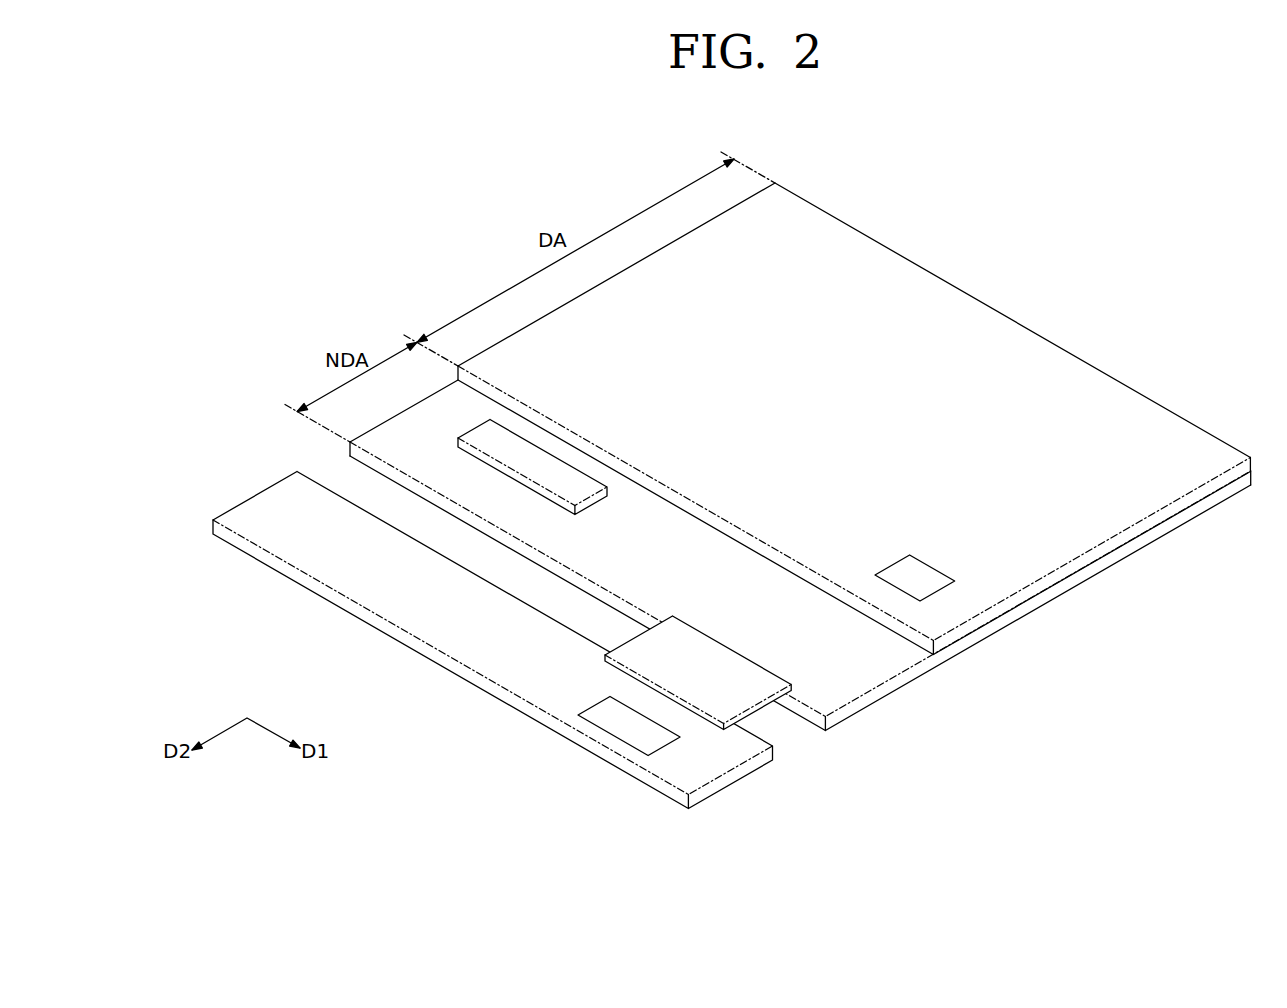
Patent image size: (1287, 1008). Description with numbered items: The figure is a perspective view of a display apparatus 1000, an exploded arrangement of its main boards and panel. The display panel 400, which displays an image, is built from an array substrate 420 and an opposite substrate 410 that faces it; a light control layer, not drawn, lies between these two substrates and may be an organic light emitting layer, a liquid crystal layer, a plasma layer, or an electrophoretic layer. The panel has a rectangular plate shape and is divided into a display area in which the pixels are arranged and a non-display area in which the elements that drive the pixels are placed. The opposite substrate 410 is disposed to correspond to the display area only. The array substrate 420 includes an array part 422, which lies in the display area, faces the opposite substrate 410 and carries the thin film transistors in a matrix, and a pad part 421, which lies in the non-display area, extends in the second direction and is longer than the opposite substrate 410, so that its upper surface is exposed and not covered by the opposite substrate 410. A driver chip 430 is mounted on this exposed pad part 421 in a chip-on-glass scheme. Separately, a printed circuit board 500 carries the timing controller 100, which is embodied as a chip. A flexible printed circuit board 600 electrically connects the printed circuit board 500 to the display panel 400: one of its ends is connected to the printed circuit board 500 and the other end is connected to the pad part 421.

The display apparatus 1000 is at (732, 492).
The display panel 400 is at (800, 469).
The opposite substrate 410 is at (1027, 589).
The array substrate 420 is at (800, 564).
The pad part 421 is at (887, 687).
The array part 422 is at (800, 579).
The driver chip 430 is at (500, 437).
The printed circuit board 500 is at (515, 647).
The flexible printed circuit board 600 is at (746, 696).
The timing controller 100 is at (622, 728).